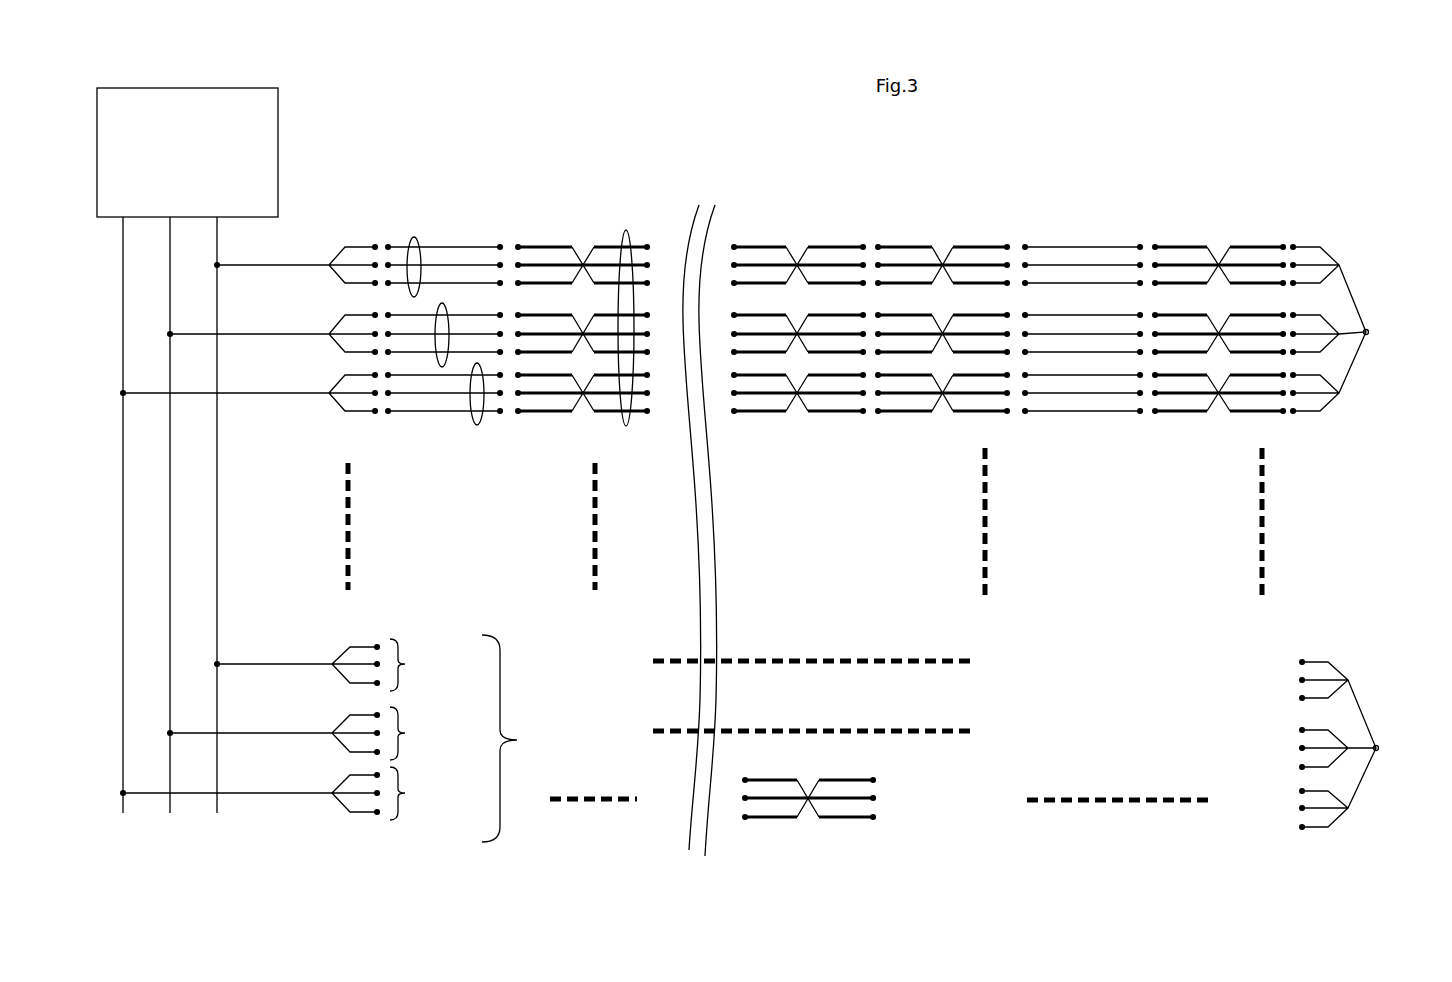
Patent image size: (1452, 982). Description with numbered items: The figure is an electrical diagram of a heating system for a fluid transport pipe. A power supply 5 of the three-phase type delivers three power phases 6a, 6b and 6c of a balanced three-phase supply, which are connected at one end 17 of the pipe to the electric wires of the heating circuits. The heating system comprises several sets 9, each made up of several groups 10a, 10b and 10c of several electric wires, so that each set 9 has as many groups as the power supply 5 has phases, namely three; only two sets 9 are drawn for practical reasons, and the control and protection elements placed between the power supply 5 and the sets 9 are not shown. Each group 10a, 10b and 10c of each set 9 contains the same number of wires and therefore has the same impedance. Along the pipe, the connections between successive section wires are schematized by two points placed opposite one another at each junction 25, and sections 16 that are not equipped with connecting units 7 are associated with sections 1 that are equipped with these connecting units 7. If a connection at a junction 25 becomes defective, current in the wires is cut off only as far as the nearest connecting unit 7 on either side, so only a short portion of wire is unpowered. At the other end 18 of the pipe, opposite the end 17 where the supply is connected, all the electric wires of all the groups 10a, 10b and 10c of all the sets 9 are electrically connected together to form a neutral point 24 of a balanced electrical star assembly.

The power supply 5 is at (187, 152).
The power phase 6a is at (222, 535).
The power phase 6b is at (247, 536).
The power phase 6c is at (270, 536).
The group 10a is at (478, 425).
The group 10b is at (443, 367).
The group 10c is at (412, 297).
The set 9 is at (628, 426).
The end of the pipe 17 is at (384, 216).
The section 16 is at (432, 216).
The junction 25 is at (514, 216).
The section 1 is at (587, 216).
The connecting unit 7 is at (1218, 365).
The end of the pipe 18 is at (1290, 214).
The neutral point 24 is at (1369, 305).